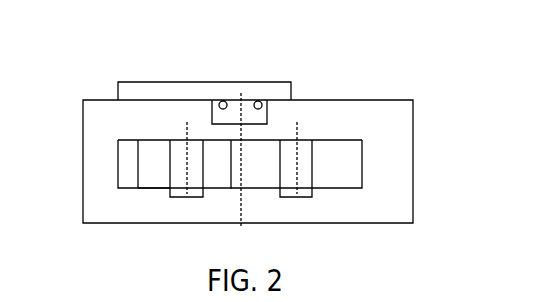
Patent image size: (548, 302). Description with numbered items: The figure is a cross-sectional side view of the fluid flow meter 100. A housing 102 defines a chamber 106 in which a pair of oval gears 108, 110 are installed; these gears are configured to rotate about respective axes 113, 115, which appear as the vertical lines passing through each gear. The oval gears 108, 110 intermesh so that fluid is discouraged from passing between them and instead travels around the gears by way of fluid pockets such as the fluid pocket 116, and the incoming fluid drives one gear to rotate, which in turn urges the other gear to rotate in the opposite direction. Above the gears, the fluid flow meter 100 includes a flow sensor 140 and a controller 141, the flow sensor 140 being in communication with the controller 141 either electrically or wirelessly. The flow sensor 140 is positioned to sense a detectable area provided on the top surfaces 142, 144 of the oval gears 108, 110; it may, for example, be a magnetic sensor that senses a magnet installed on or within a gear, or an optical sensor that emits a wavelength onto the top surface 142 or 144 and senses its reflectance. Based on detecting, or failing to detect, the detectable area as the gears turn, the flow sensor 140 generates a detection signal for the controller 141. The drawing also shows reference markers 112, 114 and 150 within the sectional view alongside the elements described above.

The fluid flow meter 100 is at (254, 128).
The housing 102 is at (107, 210).
The chamber 106 is at (118, 163).
The oval gear 108 is at (346, 170).
The oval gear 110 is at (148, 175).
The second gate electrode 112 is at (299, 191).
The axis 113 is at (307, 175).
The first gate electrode 114 is at (188, 188).
The axis 115 is at (178, 180).
The fluid pocket 116 is at (132, 152).
The flow sensor 140 is at (257, 118).
The controller 141 is at (204, 73).
The top surface 142 is at (344, 138).
The top surface 144 is at (152, 138).
The interconnect 150 is at (139, 92).